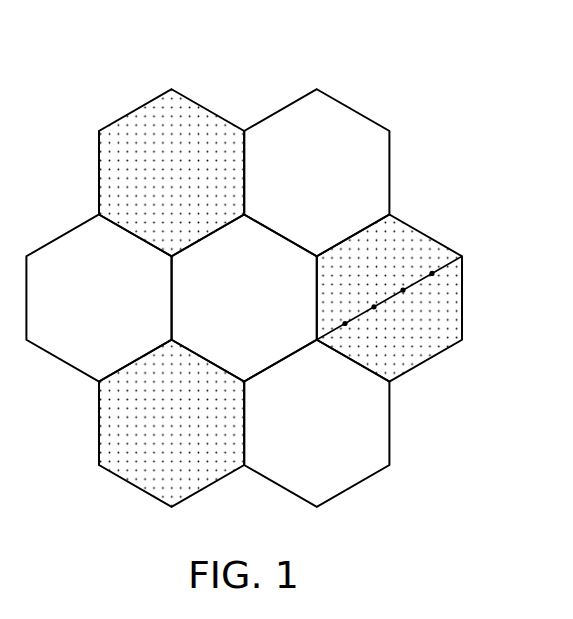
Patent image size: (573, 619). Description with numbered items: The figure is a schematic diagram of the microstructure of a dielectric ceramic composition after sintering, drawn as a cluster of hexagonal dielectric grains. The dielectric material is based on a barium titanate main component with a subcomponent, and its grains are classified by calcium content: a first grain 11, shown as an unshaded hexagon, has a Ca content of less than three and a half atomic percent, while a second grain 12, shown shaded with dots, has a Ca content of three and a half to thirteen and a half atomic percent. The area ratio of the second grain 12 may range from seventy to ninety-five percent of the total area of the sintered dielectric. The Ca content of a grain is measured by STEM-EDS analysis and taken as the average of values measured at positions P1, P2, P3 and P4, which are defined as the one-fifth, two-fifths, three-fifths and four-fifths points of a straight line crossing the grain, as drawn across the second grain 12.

The first grain 11 is at (263, 252).
The second grain 12 is at (408, 250).
The P1 position P1 is at (356, 336).
The P2 position P2 is at (386, 319).
The P3 position P3 is at (414, 303).
The P4 position P4 is at (443, 286).